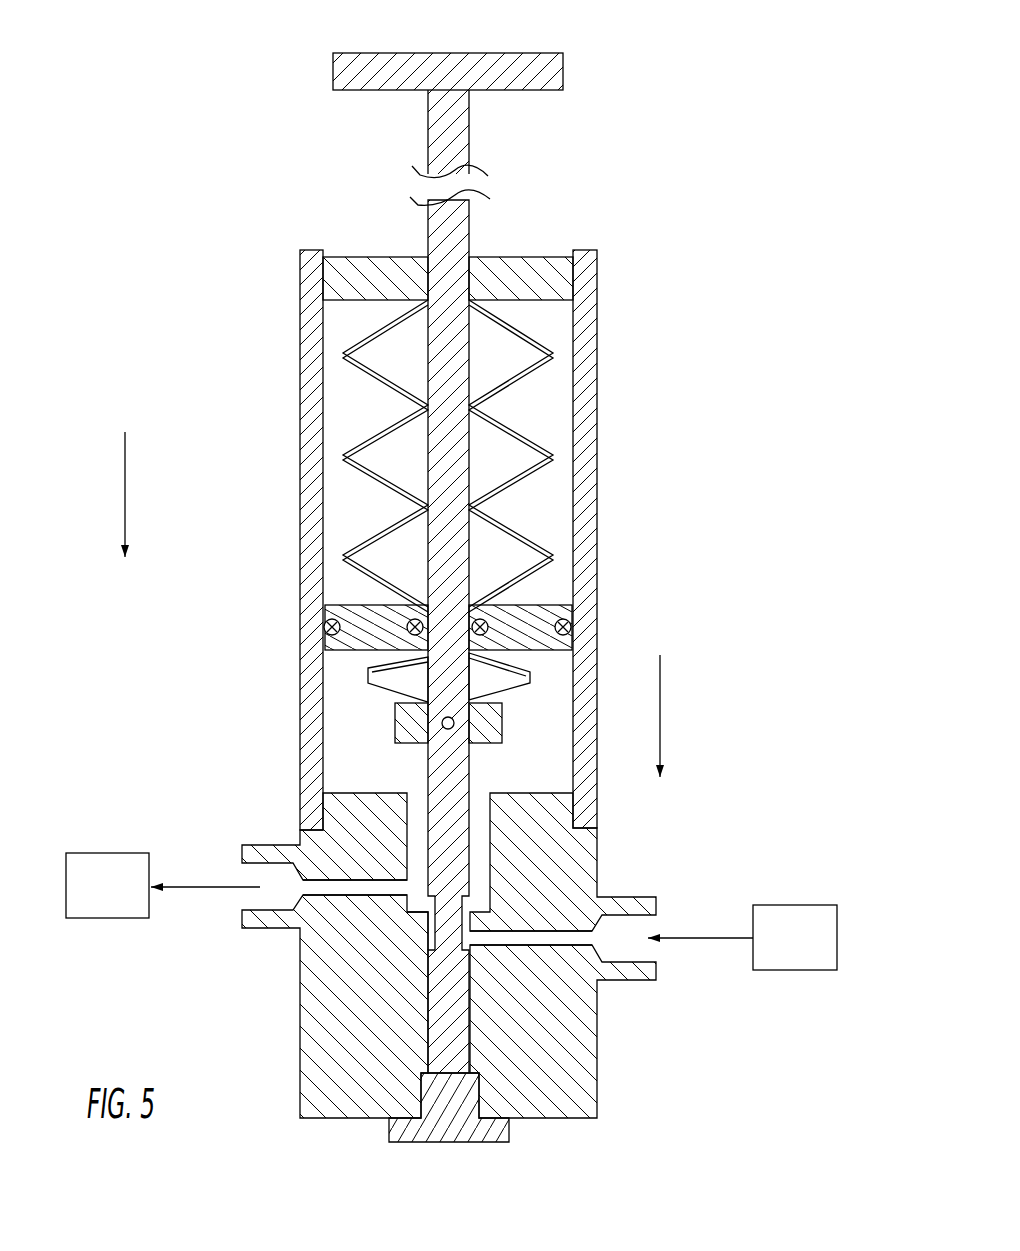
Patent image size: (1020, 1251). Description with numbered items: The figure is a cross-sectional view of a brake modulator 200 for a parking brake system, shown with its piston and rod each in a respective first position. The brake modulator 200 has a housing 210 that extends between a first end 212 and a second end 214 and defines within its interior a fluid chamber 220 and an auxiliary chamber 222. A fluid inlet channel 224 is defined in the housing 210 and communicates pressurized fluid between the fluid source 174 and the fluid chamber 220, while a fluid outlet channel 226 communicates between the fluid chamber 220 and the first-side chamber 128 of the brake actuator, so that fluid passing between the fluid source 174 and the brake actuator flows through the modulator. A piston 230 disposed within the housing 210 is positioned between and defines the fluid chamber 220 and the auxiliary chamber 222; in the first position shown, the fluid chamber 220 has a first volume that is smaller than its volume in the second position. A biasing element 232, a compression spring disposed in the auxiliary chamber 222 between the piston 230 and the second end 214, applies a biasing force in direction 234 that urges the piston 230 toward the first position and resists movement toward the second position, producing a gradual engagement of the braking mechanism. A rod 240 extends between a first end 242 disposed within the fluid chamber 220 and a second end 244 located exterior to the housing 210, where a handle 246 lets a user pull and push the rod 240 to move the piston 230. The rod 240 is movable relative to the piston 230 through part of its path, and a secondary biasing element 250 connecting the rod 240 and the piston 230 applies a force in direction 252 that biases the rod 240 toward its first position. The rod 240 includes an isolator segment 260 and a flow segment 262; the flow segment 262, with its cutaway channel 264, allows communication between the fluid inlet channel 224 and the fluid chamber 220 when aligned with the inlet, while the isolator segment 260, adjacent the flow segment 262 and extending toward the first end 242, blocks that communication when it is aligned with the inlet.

The brake modulator 200 is at (163, 175).
The housing 210 is at (288, 464).
The first end 212 is at (314, 1125).
The second end 214 is at (338, 253).
The fluid chamber 220 is at (548, 776).
The auxiliary chamber 222 is at (552, 419).
The fluid inlet channel 224 is at (531, 947).
The outlet passage 226 is at (343, 891).
The piston 230 is at (352, 641).
The biasing element 232 is at (387, 488).
The direction 234 is at (122, 477).
The rod 240 is at (474, 557).
The first end 242 is at (430, 1076).
The second end 244 is at (412, 97).
The handle 246 is at (537, 39).
The secondary biasing element 250 is at (373, 698).
The direction 252 is at (662, 703).
The isolator segment 260 is at (412, 1020).
The flow segment 262 is at (427, 927).
The cutaway channel 264 is at (429, 942).
The first-side chamber 128 is at (123, 899).
The fluid source 174 is at (811, 952).